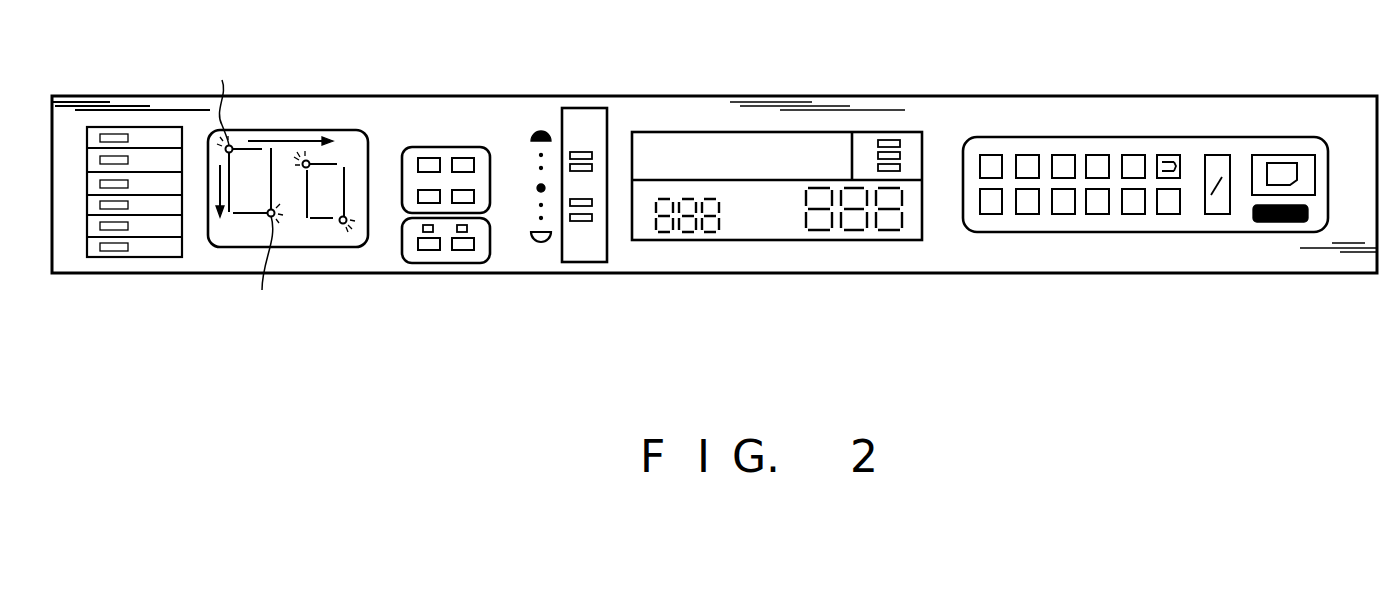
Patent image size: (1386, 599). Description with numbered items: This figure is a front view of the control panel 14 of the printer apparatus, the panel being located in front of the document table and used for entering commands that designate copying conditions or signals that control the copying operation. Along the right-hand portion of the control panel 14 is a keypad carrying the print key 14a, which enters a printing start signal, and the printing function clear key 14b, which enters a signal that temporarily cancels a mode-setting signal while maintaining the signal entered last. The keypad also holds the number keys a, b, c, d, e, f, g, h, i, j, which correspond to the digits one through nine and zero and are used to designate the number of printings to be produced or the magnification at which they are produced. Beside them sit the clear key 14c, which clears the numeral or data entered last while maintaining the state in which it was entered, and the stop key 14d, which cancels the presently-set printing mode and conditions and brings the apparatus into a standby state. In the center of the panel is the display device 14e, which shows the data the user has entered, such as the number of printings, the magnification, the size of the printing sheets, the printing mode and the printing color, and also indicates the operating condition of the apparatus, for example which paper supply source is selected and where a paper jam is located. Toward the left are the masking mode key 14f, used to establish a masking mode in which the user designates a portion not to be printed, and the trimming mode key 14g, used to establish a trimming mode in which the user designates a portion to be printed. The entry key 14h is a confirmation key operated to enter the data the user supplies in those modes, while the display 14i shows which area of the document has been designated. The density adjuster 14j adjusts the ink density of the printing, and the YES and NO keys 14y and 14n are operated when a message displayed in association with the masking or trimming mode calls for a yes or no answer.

The control panel 14 is at (840, 96).
The print key 14a is at (1278, 163).
The printing function clear key 14b is at (1220, 214).
The clear key 14c is at (1170, 214).
The stop key 14d is at (1290, 222).
The display device 14e is at (687, 137).
The masking mode key 14f is at (428, 247).
The trimming mode key 14g is at (465, 250).
The entry key 14h is at (474, 198).
The display 14i is at (318, 131).
The density adjuster 14j is at (590, 110).
The NO key 14n is at (468, 157).
The YES key 14y is at (428, 156).
The number key a is at (987, 156).
The number key b is at (1028, 156).
The number key c is at (1068, 156).
The number key d is at (1103, 156).
The number key e is at (1138, 156).
The number key f is at (990, 214).
The number key g is at (1026, 214).
The number key h is at (1062, 214).
The number key i is at (1098, 214).
The number key j is at (1133, 214).